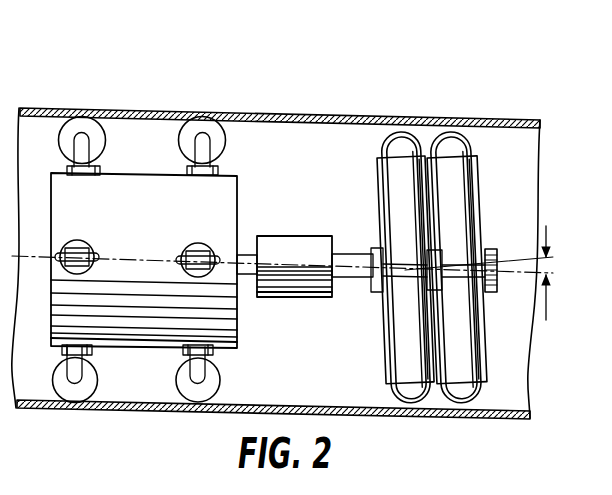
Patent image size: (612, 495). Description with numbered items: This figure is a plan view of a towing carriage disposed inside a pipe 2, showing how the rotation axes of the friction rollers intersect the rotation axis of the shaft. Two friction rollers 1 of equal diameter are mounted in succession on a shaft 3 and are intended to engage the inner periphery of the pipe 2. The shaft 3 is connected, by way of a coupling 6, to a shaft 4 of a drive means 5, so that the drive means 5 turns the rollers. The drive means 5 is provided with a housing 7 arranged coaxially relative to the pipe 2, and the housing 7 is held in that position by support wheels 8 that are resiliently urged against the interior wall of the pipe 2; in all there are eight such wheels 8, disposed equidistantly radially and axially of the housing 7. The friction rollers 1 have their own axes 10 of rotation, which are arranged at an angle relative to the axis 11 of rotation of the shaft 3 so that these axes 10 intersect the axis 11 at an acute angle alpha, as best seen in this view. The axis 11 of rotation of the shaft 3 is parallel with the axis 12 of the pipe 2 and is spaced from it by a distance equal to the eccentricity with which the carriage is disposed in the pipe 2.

The friction rollers 1 is at (403, 147).
The pipe 2 is at (483, 119).
The shaft 3 is at (489, 249).
The shaft of drive means 4 is at (243, 264).
The drive means 5 is at (140, 351).
The coupling 6 is at (277, 283).
The housing 7 is at (221, 197).
The support wheels 8 is at (213, 137).
The axes of rotation of friction rollers 10 is at (366, 278).
The axis of rotation of the shaft 11 is at (499, 276).
The axis of the pipe 12 is at (34, 259).